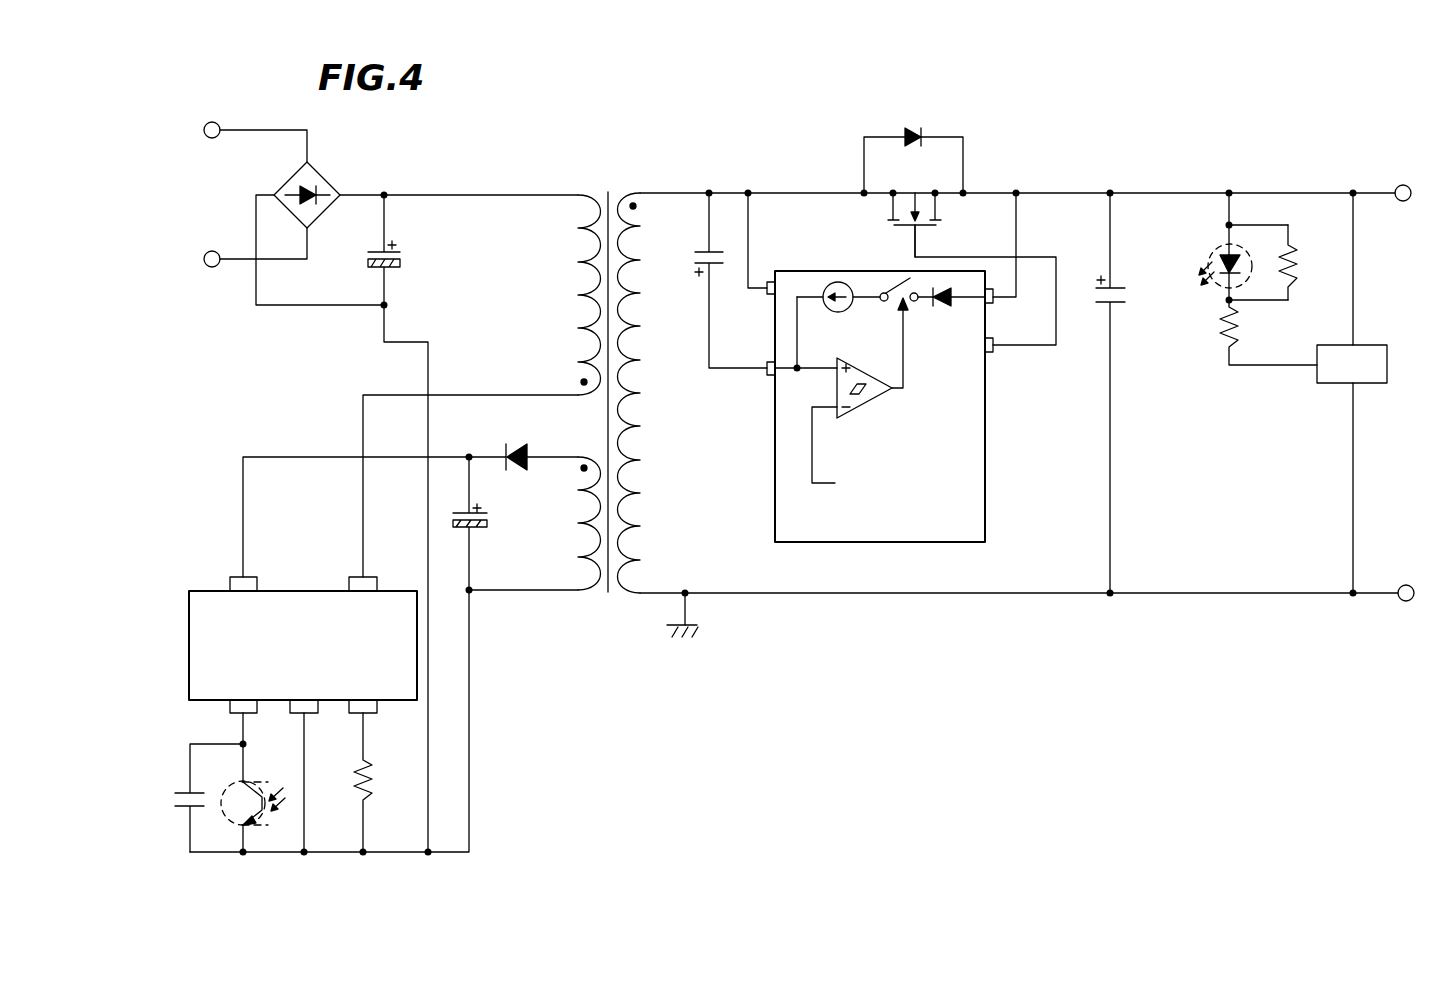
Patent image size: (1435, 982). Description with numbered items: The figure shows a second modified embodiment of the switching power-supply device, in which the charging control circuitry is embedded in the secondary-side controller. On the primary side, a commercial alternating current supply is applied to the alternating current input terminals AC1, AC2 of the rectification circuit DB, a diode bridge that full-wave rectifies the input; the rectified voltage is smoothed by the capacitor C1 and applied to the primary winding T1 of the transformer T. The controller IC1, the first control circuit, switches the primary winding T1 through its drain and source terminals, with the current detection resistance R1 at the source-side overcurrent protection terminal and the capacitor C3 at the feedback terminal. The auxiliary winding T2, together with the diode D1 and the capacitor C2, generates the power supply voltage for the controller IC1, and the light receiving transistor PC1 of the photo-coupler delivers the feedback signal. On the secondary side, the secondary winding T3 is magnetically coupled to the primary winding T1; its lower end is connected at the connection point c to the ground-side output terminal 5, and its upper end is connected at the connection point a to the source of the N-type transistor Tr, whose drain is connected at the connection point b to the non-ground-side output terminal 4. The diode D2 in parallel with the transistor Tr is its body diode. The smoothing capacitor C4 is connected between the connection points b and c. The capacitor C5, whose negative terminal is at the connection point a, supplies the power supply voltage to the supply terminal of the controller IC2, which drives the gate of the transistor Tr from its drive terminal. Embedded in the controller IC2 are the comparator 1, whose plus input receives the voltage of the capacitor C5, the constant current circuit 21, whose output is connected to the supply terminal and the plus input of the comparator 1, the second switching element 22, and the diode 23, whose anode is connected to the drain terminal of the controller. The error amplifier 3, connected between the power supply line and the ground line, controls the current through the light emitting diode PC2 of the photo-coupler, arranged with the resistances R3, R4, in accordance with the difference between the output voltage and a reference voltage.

The alternating current input terminal AC1 is at (211, 122).
The alternating current input terminal AC2 is at (212, 251).
The rectification circuit DB is at (322, 177).
The capacitor C1 is at (380, 250).
The transformer T is at (623, 183).
The primary winding T1 is at (597, 315).
The auxiliary winding T2 is at (597, 538).
The secondary winding T3 is at (620, 378).
The diode D1 is at (516, 444).
The capacitor C2 is at (460, 512).
The controller IC1 is at (189, 648).
The capacitor C3 is at (180, 791).
The light receiving transistor PC1 is at (230, 830).
The current detection resistance R1 is at (374, 783).
The controller IC2 is at (883, 373).
The capacitor C5 is at (701, 250).
The connection point a is at (748, 190).
The second switching element 22 is at (902, 285).
The N-type transistor Tr is at (910, 226).
The constant current circuit 21 is at (834, 312).
The comparator 1 is at (856, 362).
The diode 23 is at (946, 306).
The diode D2 is at (917, 127).
The connection point b is at (1110, 190).
The connection point c is at (1110, 592).
The smoothing capacitor C4 is at (1114, 286).
The light emitting diode PC2 is at (1213, 243).
The resistance R4 is at (1297, 270).
The resistance R3 is at (1237, 332).
The error amplifier 3 is at (1330, 344).
The non-ground-side output terminal 4 is at (1402, 185).
The ground-side output terminal 5 is at (1405, 585).